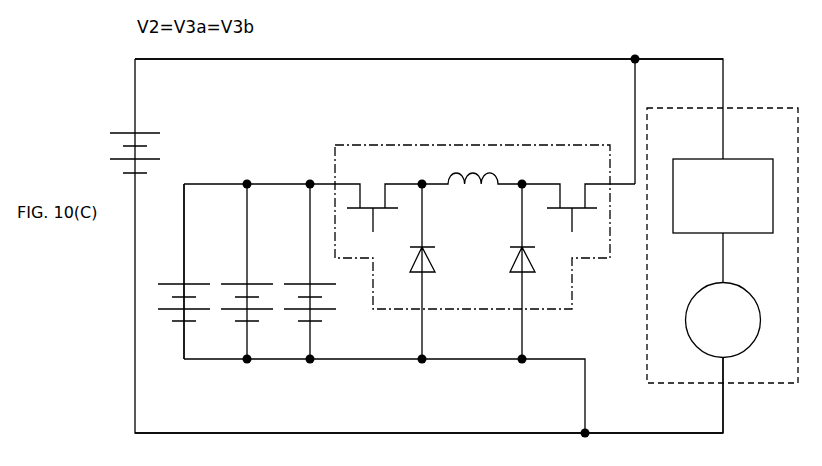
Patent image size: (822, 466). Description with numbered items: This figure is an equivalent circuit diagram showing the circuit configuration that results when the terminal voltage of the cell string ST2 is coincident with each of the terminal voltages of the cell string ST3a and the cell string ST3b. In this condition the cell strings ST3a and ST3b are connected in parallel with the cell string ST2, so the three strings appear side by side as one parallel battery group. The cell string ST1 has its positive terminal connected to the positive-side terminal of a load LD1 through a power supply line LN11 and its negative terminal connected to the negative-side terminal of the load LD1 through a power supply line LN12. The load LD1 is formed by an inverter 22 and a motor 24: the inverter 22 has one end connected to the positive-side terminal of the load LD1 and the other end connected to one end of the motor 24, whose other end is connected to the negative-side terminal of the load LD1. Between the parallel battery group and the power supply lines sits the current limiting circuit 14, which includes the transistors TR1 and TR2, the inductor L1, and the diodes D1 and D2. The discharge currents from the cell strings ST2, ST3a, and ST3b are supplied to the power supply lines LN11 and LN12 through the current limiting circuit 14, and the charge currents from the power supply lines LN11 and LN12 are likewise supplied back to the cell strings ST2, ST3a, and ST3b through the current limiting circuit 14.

The current limiting circuit 14 is at (487, 305).
The inverter 22 is at (752, 158).
The motor 24 is at (748, 286).
The power supply line LN11 is at (675, 57).
The power supply line LN12 is at (625, 412).
The load LD1 is at (691, 378).
The cell string ST1 is at (126, 140).
The cell string ST2 is at (317, 271).
The cell string ST3a is at (260, 271).
The cell string ST3b is at (197, 271).
The transistor TR1 is at (378, 196).
The transistor TR2 is at (578, 196).
The inductor L1 is at (472, 195).
The diode D1 is at (438, 271).
The diode D2 is at (507, 271).